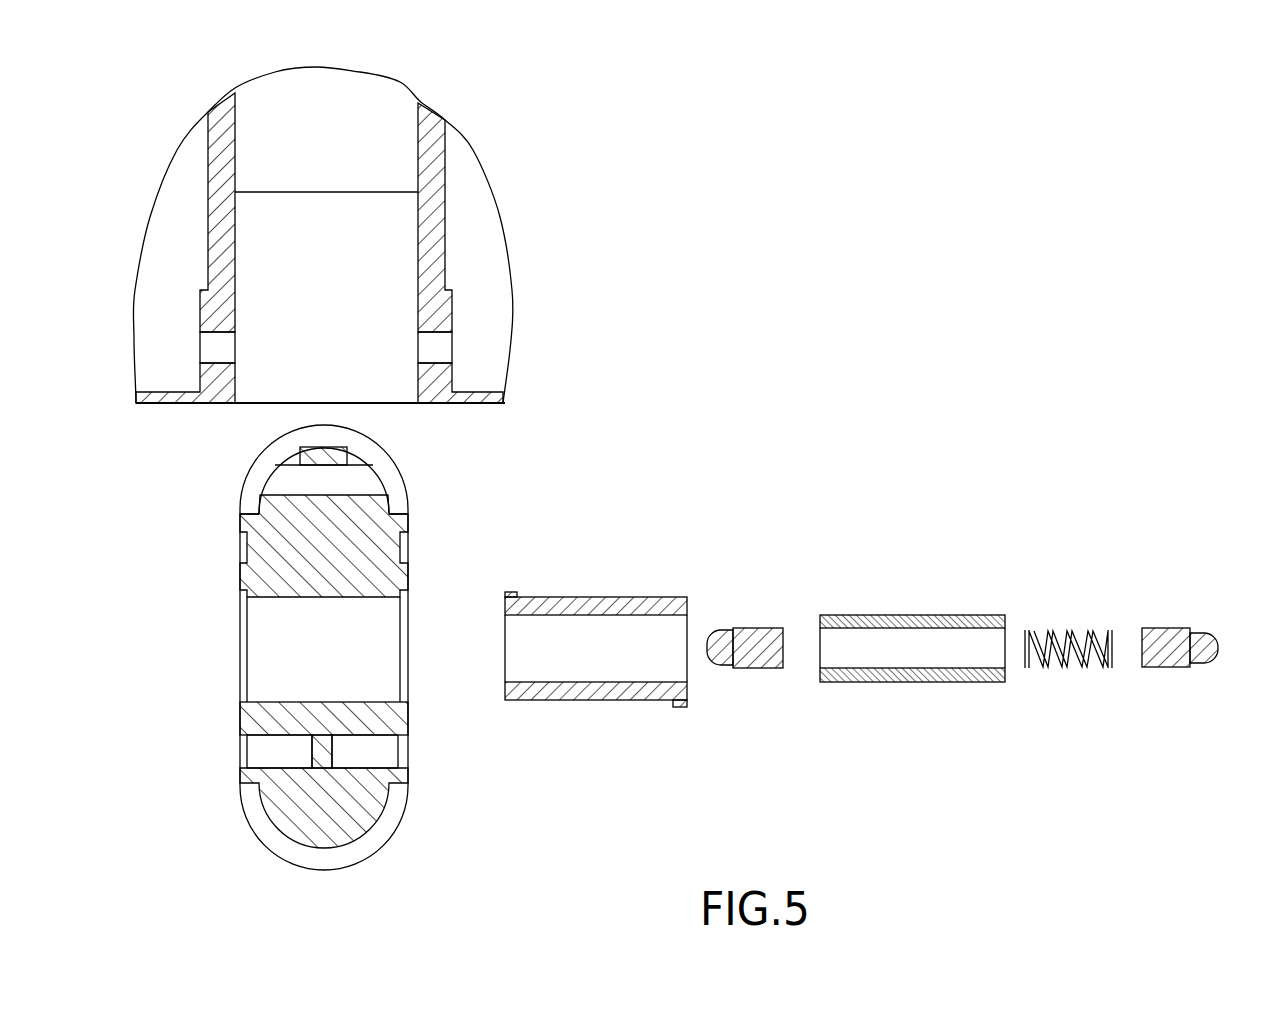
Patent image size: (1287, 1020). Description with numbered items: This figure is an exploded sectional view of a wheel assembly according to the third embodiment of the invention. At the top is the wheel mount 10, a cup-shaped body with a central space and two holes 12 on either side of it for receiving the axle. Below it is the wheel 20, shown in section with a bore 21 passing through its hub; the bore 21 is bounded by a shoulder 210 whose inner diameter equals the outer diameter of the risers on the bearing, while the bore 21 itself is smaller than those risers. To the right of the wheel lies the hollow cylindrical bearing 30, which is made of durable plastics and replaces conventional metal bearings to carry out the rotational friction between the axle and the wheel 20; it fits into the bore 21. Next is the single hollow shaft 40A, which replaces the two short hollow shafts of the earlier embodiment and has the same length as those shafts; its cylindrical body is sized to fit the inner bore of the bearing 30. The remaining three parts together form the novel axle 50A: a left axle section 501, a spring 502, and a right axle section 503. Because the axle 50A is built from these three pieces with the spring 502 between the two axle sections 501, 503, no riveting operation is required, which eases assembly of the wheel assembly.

The wheel mount 10 is at (460, 183).
The hole 12 is at (438, 349).
The wheel 20 is at (336, 647).
The bore 21 is at (262, 640).
The shoulder 210 is at (246, 709).
The hollow cylindrical bearing 30 is at (608, 593).
The axle 50A is at (978, 556).
The left axle section 501 is at (747, 618).
The hollow shaft 40A is at (860, 636).
The spring 502 is at (1055, 635).
The right axle section 503 is at (1165, 640).